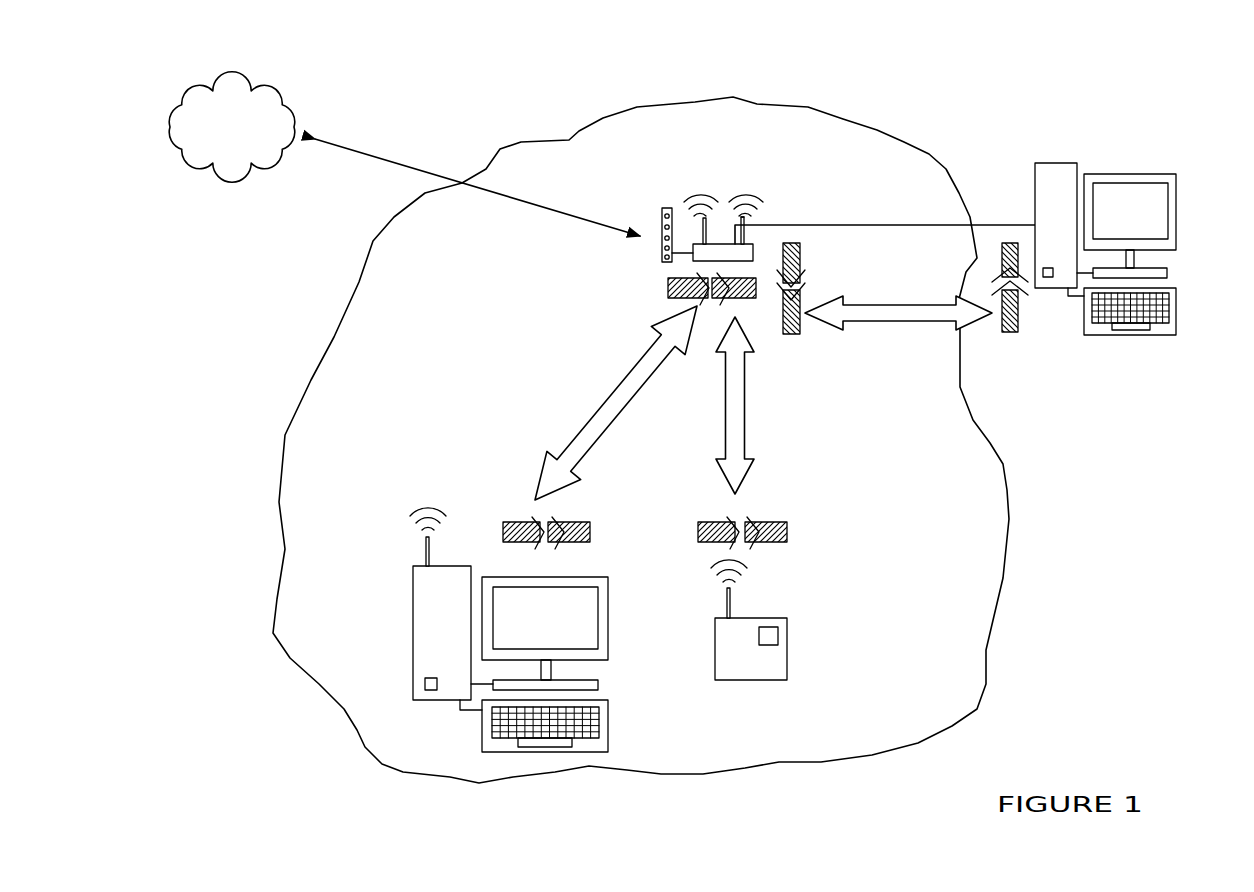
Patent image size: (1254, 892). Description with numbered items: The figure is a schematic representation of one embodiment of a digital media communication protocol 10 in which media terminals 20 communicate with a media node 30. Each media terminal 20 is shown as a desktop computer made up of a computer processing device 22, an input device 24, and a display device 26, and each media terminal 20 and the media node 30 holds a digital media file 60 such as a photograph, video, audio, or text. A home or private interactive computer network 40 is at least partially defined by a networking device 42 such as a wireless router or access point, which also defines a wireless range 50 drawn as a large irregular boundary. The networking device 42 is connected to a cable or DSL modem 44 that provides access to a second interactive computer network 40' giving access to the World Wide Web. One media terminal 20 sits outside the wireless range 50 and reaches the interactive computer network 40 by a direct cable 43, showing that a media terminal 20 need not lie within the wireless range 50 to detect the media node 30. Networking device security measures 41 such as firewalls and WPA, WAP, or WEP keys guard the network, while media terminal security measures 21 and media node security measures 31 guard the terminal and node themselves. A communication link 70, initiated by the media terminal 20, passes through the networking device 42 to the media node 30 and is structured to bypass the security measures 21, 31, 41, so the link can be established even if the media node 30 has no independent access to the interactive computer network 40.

The digital media communication protocol 10 is at (570, 56).
The media terminal 20 is at (755, 459).
The media terminal security measures 21 is at (507, 522).
The computer processing device 22 is at (413, 590).
The input device 24 is at (534, 755).
The display device 26 is at (610, 608).
The media node 30 is at (748, 682).
The media node security measures 31 is at (790, 522).
The interactive computer network 40 is at (723, 190).
The interactive computer network with World Wide Web access 40' is at (404, 154).
The networking device security measures 41 is at (664, 289).
The networking device 42 is at (754, 248).
The direct cable 43 is at (928, 225).
The cable or DSL modem 44 is at (661, 214).
The wireless range 50 is at (305, 388).
The digital media file 60 is at (425, 683).
The communication link 70 is at (619, 380).